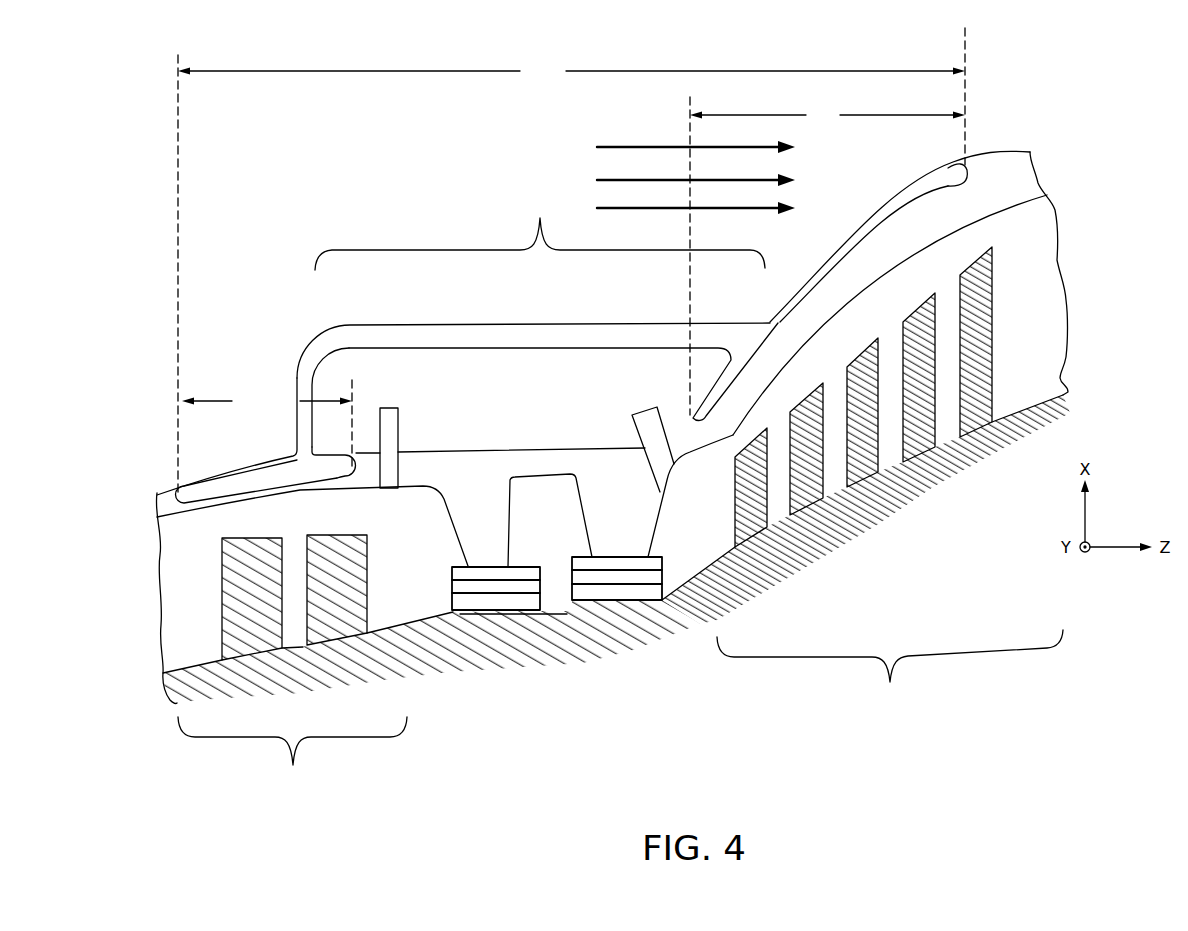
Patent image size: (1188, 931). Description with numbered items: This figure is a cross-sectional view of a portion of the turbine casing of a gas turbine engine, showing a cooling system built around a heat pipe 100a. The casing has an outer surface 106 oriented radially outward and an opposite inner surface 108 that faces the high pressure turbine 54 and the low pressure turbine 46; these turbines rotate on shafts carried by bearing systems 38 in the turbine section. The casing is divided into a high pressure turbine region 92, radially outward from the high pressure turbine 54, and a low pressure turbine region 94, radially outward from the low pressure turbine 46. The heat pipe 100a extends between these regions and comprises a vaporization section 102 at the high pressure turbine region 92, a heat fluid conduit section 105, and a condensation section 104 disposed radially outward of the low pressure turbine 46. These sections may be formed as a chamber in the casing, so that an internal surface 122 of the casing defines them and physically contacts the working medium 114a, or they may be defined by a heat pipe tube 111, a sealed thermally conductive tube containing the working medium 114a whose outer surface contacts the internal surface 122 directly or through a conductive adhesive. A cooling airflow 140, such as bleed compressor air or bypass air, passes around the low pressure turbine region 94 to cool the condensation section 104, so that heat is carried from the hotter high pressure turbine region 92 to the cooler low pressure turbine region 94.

The bearing systems 38 is at (650, 557).
The low pressure turbine 46 is at (863, 350).
The high pressure turbine 54 is at (223, 573).
The high pressure turbine region 92 is at (292, 757).
The low pressure turbine region 94 is at (890, 673).
The heat pipe 100a is at (571, 262).
The vaporization section 102 is at (267, 425).
The condensation section 104 is at (827, 256).
The heat fluid conduit section 105 is at (540, 227).
The outer surface 106 is at (240, 466).
The inner surface 108 is at (273, 495).
The heat pipe tube 111 is at (313, 482).
The working medium 114a is at (206, 489).
The internal surface 122 is at (338, 482).
The cooling airflow 140 is at (625, 147).